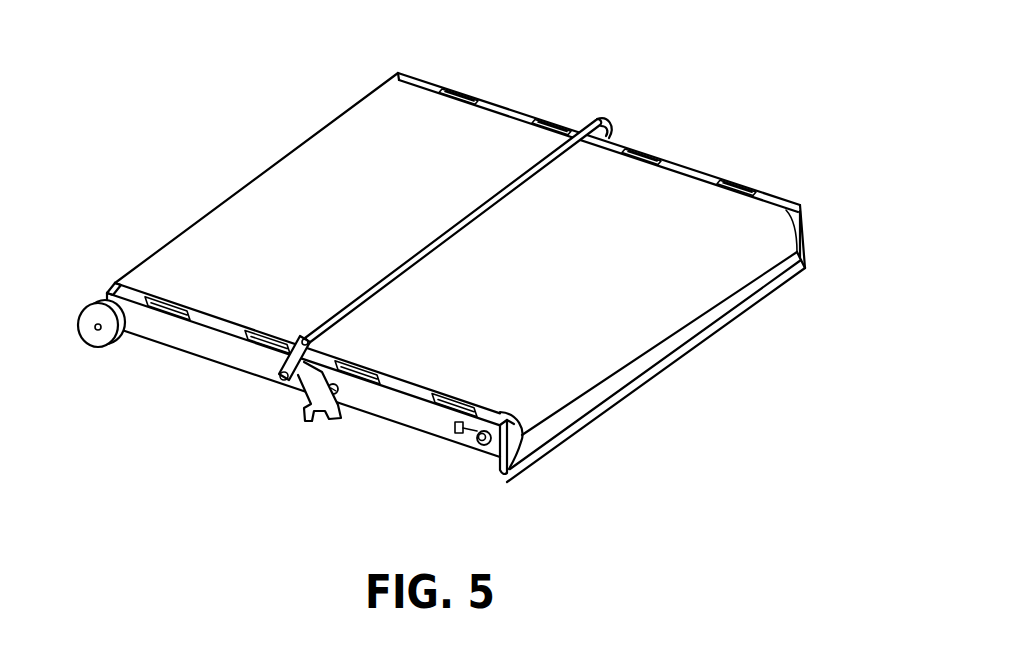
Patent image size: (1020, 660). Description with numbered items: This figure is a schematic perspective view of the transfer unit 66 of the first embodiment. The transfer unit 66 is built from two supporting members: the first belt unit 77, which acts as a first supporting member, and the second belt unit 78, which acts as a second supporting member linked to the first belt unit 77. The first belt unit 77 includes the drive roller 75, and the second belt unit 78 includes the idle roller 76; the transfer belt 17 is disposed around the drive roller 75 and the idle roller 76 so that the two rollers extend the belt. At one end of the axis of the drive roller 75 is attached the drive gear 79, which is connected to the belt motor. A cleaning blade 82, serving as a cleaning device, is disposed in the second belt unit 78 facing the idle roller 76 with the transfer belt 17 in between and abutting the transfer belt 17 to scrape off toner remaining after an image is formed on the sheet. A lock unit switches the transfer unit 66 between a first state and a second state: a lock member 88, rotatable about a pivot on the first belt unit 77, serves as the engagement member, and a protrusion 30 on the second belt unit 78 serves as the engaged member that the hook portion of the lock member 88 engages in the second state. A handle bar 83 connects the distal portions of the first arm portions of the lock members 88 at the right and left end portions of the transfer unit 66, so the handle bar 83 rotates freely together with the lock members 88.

The transfer unit 66 is at (463, 89).
The handle bar 83 is at (553, 156).
The drive roller 75 is at (118, 284).
The drive gear 79 is at (89, 340).
The first belt unit 77 is at (162, 366).
The second belt unit 78 is at (371, 432).
The protrusion 30 is at (335, 383).
The lock member 88 is at (303, 392).
The transfer belt 17 is at (483, 380).
The idle roller 76 is at (530, 442).
The cleaning blade 82 is at (620, 394).